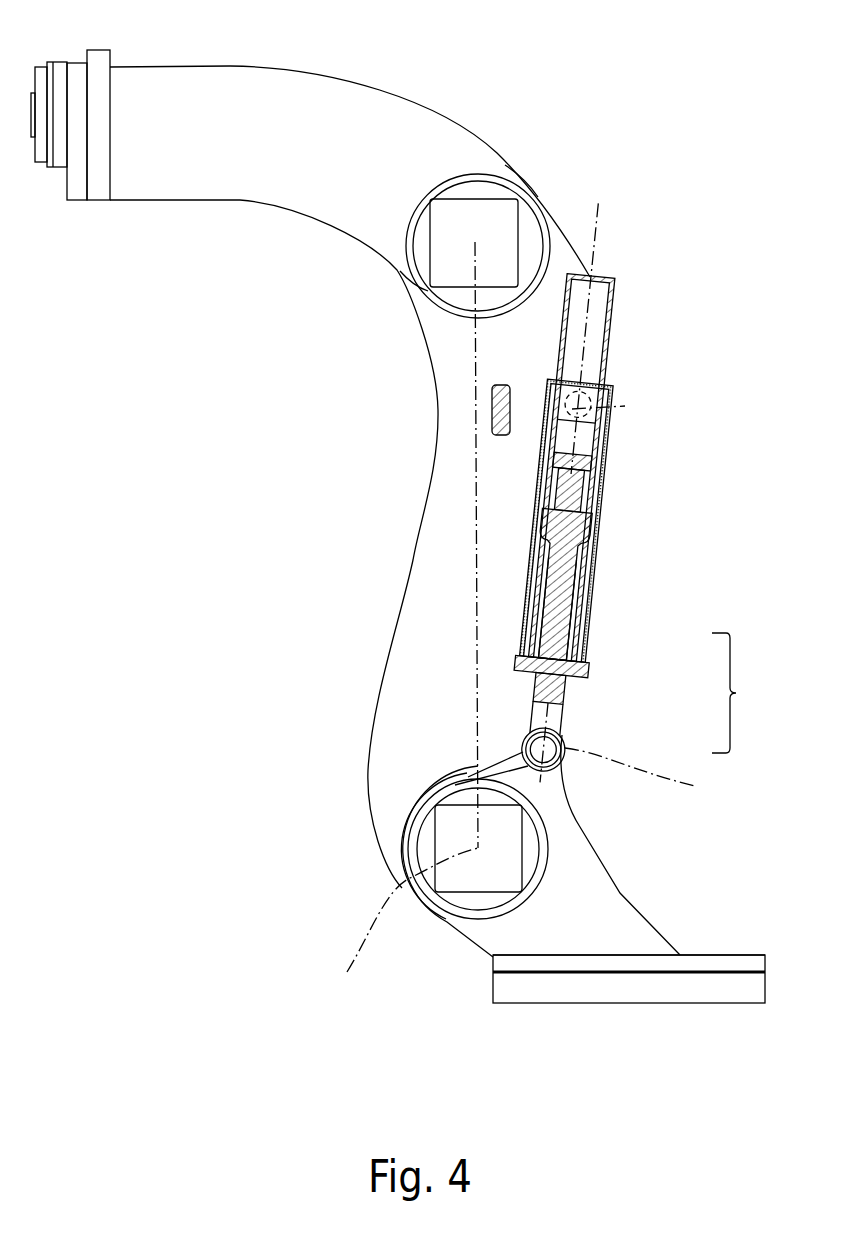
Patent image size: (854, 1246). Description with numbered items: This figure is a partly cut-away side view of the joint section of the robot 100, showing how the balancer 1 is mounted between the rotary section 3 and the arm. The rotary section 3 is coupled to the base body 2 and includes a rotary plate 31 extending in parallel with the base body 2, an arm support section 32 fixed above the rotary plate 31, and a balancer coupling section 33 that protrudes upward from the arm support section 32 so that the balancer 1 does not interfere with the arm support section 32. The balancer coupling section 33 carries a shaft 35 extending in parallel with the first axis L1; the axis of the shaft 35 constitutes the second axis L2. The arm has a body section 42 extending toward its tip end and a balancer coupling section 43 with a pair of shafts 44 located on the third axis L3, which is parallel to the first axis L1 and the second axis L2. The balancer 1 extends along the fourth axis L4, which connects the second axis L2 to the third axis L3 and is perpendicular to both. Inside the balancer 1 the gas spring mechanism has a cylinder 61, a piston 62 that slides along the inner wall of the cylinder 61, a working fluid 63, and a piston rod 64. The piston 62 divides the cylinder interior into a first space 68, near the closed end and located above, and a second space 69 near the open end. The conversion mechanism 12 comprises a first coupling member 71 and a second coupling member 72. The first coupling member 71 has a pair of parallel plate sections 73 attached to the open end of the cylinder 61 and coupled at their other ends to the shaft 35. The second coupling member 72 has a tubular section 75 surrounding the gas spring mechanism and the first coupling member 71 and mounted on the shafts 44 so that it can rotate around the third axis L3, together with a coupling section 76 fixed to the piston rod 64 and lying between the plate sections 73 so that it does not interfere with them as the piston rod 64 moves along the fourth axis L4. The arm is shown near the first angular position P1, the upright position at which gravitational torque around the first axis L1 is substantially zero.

The robot 100 is at (657, 115).
The balancer 1 is at (587, 491).
The base body 2 is at (655, 985).
The rotary section 3 is at (465, 945).
The conversion mechanism 12 is at (742, 693).
The rotary plate 31 is at (735, 962).
The arm support section 32 is at (605, 912).
The balancer coupling section 33 is at (513, 767).
The shaft 35 is at (567, 807).
The body section 42 is at (430, 597).
The balancer coupling section 43 is at (492, 405).
The shafts 44 is at (614, 370).
The cylinder 61 is at (610, 352).
The piston 62 is at (604, 470).
The working fluid 63 is at (596, 322).
The piston rod 64 is at (596, 559).
The first space 68 is at (575, 338).
The second space 69 is at (586, 497).
The first coupling member 71 is at (567, 693).
The second coupling member 72 is at (593, 623).
The plate sections 73 is at (537, 518).
The tubular section 75 is at (596, 587).
The coupling section 76 is at (523, 677).
The first axis L1 is at (393, 923).
The second axis L2 is at (649, 776).
The third axis L3 is at (625, 406).
The fourth axis L4 is at (616, 296).
The first angular position P1 is at (470, 485).